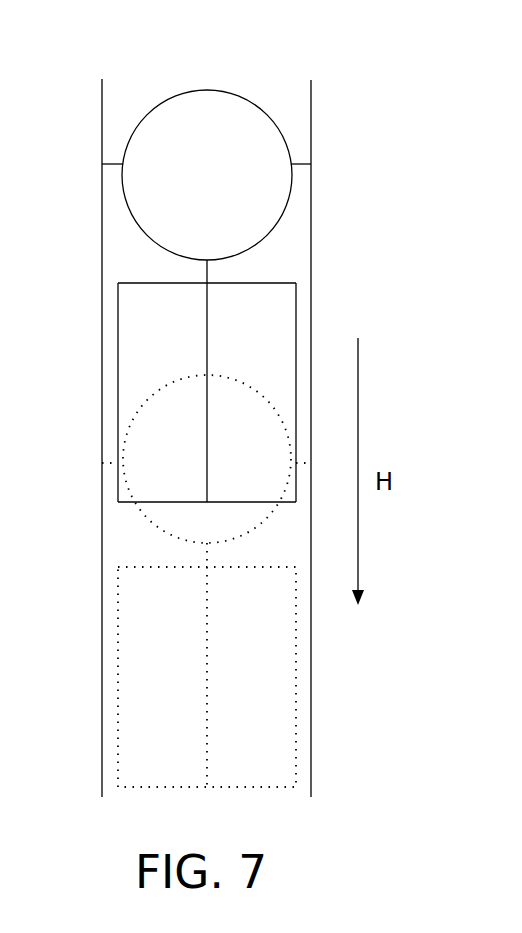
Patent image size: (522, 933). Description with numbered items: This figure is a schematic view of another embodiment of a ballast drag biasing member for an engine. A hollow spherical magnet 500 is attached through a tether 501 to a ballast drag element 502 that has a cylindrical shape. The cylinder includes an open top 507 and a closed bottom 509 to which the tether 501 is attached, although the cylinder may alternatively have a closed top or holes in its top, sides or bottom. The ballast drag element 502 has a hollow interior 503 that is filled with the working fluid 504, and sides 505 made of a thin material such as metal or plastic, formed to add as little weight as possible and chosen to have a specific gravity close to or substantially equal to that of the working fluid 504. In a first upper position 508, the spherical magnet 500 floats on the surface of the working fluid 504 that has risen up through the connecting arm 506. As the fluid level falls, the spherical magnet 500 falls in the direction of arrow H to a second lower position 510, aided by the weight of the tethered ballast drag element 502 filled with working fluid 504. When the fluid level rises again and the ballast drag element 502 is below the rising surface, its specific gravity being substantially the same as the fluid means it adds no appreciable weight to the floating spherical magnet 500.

The spherical magnet 500 is at (180, 90).
The tether 501 is at (207, 273).
The ballast drag element 502 is at (109, 381).
The hollow interior 503 is at (261, 320).
The working fluid 504 is at (112, 165).
The sides 505 is at (118, 333).
The connecting arm 506 is at (311, 186).
The open top 507 is at (274, 282).
The first upper position 508 is at (152, 110).
The closed bottom 509 is at (163, 503).
The second lower position 510 is at (142, 407).